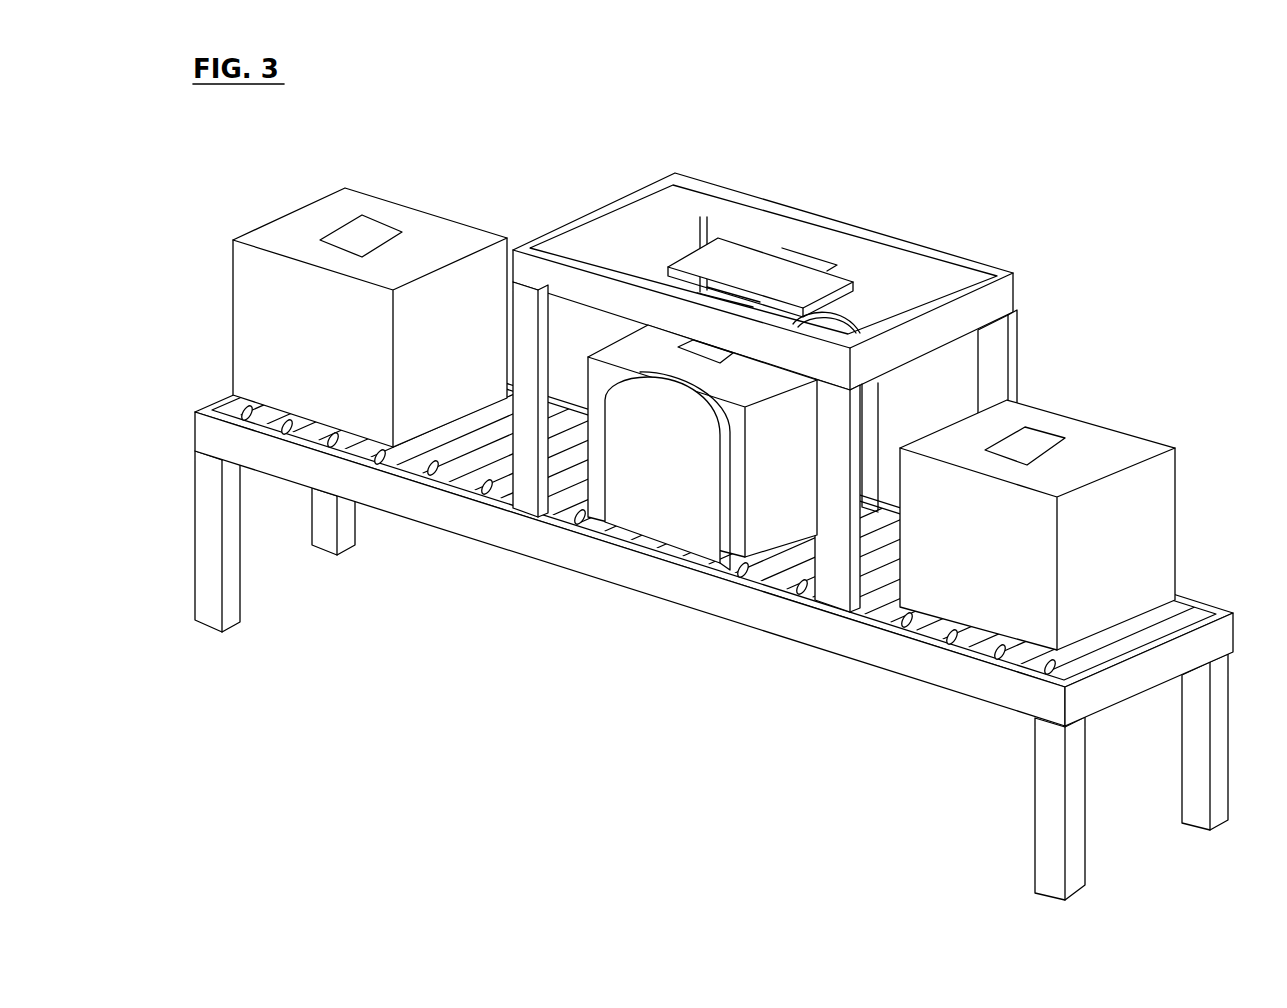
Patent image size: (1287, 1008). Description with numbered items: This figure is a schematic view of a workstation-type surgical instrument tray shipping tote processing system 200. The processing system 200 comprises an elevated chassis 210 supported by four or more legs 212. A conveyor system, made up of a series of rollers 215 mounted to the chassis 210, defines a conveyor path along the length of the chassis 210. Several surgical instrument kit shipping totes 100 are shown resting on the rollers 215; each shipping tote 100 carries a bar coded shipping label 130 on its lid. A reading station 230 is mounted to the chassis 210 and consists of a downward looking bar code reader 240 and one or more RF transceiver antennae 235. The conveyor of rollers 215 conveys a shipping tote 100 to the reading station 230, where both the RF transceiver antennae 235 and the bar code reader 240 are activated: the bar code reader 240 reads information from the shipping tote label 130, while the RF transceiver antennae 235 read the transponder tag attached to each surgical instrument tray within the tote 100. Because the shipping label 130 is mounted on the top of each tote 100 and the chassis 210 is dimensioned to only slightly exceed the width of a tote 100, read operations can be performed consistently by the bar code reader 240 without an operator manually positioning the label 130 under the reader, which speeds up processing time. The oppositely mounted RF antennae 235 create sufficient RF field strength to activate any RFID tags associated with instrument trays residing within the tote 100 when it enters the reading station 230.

The surgical instrument kit shipping tote 100 is at (339, 345).
The bar coded shipping label 130 is at (364, 216).
The processing system 200 is at (500, 116).
The elevated chassis 210 is at (803, 650).
The legs 212 is at (1087, 842).
The rollers 215 is at (457, 470).
The reading station 230 is at (930, 247).
The RF transceiver antennae 235 is at (640, 478).
The bar code reader 240 is at (773, 281).